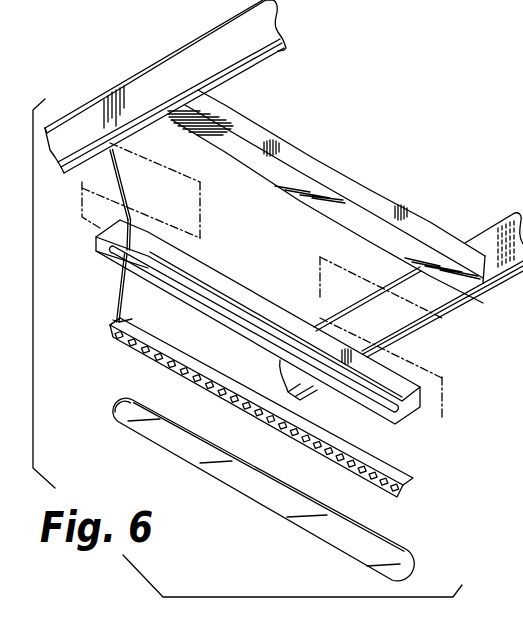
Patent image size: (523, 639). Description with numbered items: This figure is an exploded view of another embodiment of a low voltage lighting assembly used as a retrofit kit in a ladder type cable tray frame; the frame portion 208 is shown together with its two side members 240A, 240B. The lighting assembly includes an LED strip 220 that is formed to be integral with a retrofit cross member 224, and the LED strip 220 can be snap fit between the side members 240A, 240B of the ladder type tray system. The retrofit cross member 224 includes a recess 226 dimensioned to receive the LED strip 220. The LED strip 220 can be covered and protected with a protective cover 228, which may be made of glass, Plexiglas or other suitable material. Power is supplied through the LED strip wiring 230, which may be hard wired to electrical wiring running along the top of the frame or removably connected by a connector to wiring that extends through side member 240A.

The side member 240A is at (212, 43).
The housing frame 208 is at (508, 0).
The side member 240B is at (480, 241).
The retrofit cross member 224 is at (262, 296).
The recess 226 is at (211, 300).
The LED strip wiring 230 is at (120, 298).
The LED strip 220 is at (414, 486).
The protective cover 228 is at (410, 560).